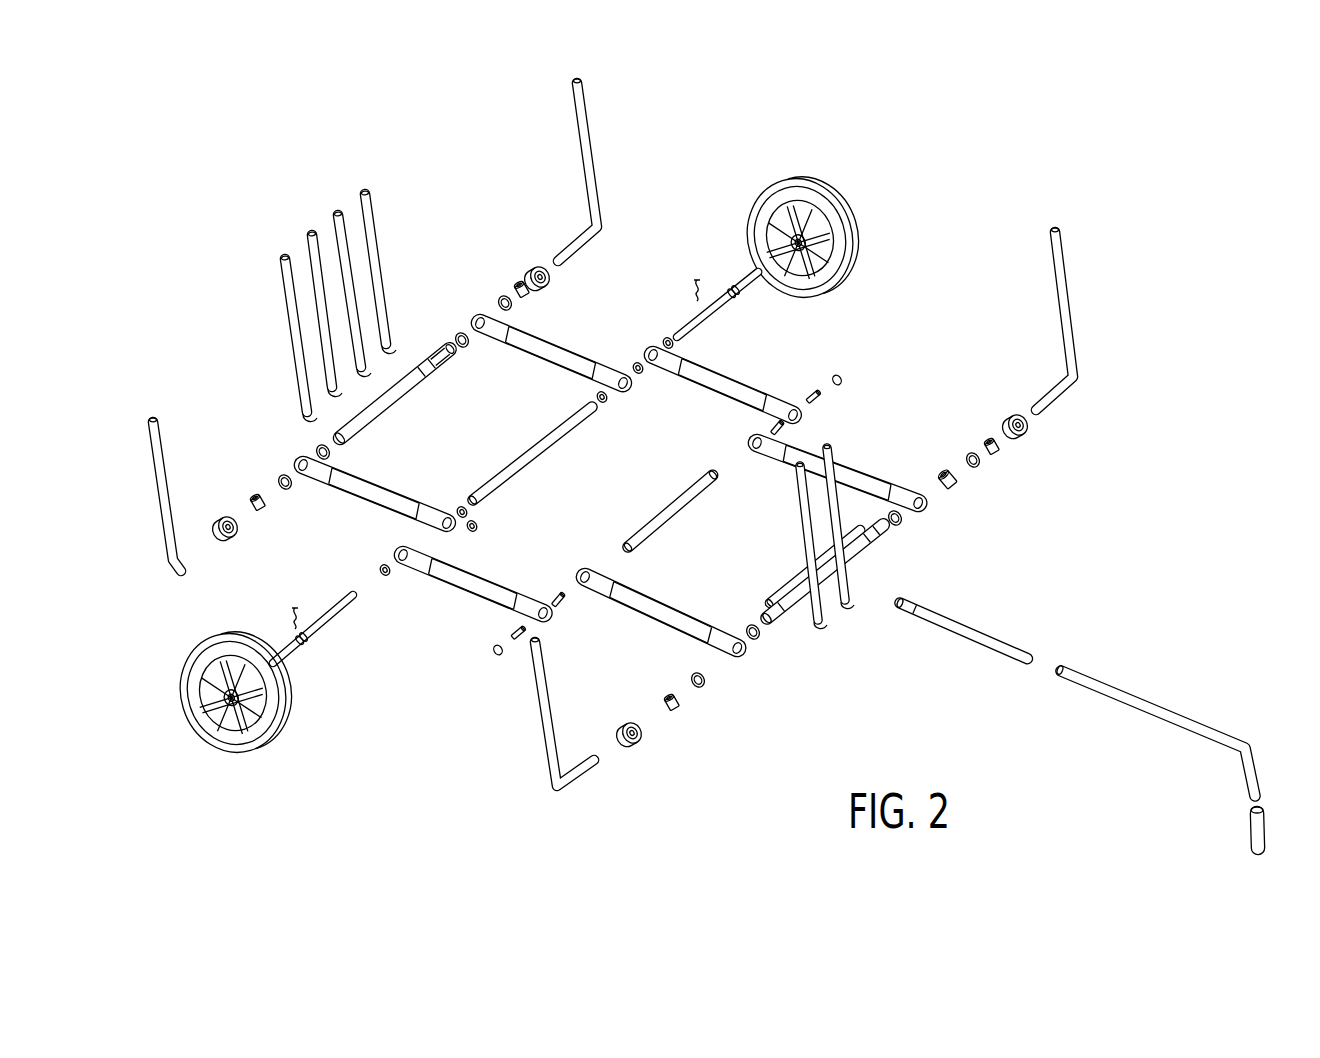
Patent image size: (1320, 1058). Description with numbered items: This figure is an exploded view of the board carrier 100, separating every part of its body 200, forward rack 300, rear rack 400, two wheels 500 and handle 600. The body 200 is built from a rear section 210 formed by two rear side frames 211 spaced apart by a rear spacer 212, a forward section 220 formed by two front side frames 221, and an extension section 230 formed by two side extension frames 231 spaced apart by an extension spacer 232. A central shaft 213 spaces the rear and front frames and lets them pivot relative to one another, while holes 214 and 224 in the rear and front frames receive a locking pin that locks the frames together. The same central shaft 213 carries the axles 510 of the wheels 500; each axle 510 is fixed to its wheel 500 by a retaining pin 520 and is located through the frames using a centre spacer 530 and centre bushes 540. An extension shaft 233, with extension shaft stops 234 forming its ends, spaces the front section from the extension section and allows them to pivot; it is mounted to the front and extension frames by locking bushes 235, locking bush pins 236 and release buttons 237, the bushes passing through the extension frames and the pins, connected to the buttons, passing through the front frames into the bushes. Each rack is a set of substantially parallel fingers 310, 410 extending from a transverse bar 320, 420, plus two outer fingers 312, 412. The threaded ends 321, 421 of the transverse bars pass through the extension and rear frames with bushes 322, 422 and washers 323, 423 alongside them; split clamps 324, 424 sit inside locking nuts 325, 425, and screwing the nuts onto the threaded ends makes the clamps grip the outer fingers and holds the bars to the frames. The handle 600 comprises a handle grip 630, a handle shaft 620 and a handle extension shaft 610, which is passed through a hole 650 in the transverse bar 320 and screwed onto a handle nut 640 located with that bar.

The board carrier 100 is at (900, 216).
The body 200 is at (288, 530).
The rear section 210 is at (666, 226).
The rear side frame 211 is at (300, 460).
The rear spacer 212 is at (380, 416).
The central shaft 213 is at (545, 440).
The hole 214 is at (445, 511).
The forward section 220 is at (832, 356).
The front side frame 221 is at (440, 576).
The hole 224 is at (417, 539).
The extension section 230 is at (936, 396).
The side extension frame 231 is at (655, 606).
The extension spacer 232 is at (790, 584).
The extension shaft 233 is at (666, 510).
The extension shaft stop 234 is at (720, 479).
The locking bush 235 is at (556, 594).
The locking bush pin 236 is at (512, 636).
The release button 237 is at (845, 380).
The forward rack 300 is at (1092, 232).
The finger 310 is at (850, 582).
The outer finger 312 is at (1072, 335).
The transverse bar 320 is at (866, 546).
The threaded end 321 is at (905, 521).
The bush 322 is at (966, 456).
The washer 323 is at (761, 641).
The split clamp 324 is at (1000, 451).
The locking nut 325 is at (1026, 433).
The rear rack 400 is at (450, 196).
The finger 410 is at (370, 214).
The outer finger 412 is at (583, 148).
The transverse bar 420 is at (425, 370).
The threaded end 421 is at (450, 346).
The bush 422 is at (503, 298).
The washer 423 is at (465, 350).
The split clamp 424 is at (520, 286).
The locking nut 425 is at (540, 268).
The wheel 500 is at (815, 178).
The axle 510 is at (320, 626).
The retaining pin 520 is at (276, 732).
The centre spacer 530 is at (470, 513).
The centre bush 540 is at (474, 528).
The handle 600 is at (1116, 662).
The handle extension shaft 610 is at (975, 630).
The handle shaft 620 is at (1140, 700).
The handle grip 630 is at (1250, 832).
The handle nut 640 is at (956, 484).
The hole 650 is at (828, 592).